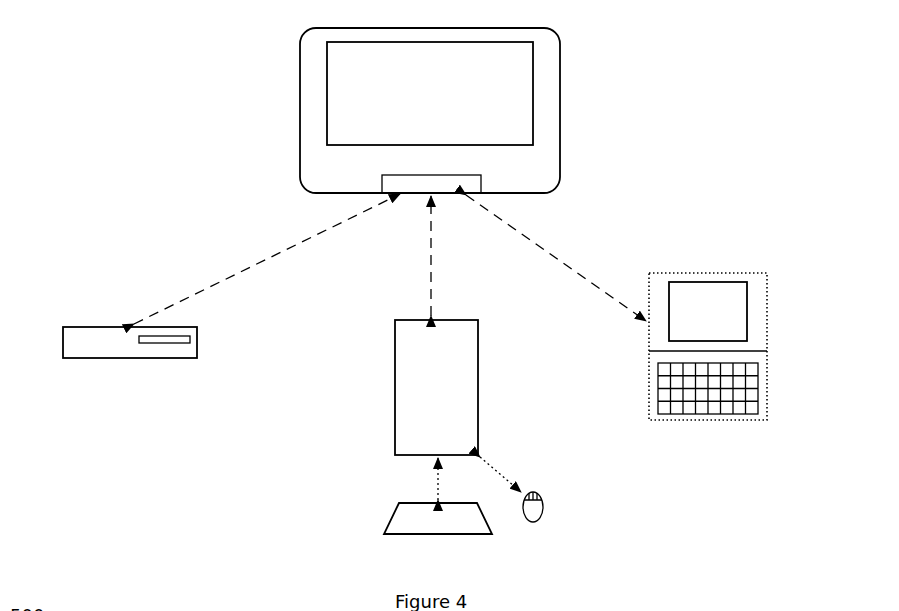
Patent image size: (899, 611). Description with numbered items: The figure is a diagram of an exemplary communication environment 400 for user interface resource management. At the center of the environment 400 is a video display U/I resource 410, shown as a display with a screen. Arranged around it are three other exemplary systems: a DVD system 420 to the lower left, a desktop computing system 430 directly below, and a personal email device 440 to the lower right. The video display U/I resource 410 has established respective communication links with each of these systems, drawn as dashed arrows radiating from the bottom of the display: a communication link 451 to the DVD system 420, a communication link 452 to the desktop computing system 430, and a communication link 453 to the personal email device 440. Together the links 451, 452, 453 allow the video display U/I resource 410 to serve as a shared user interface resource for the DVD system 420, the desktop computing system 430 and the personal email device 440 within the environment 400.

The communication environment 400 is at (86, 88).
The video display U/I resource 410 is at (560, 110).
The DVD system 420 is at (197, 337).
The desktop computing system 430 is at (478, 390).
The personal email device 440 is at (767, 318).
The communication link 451 is at (283, 252).
The communication link 452 is at (431, 283).
The communication link 453 is at (528, 235).